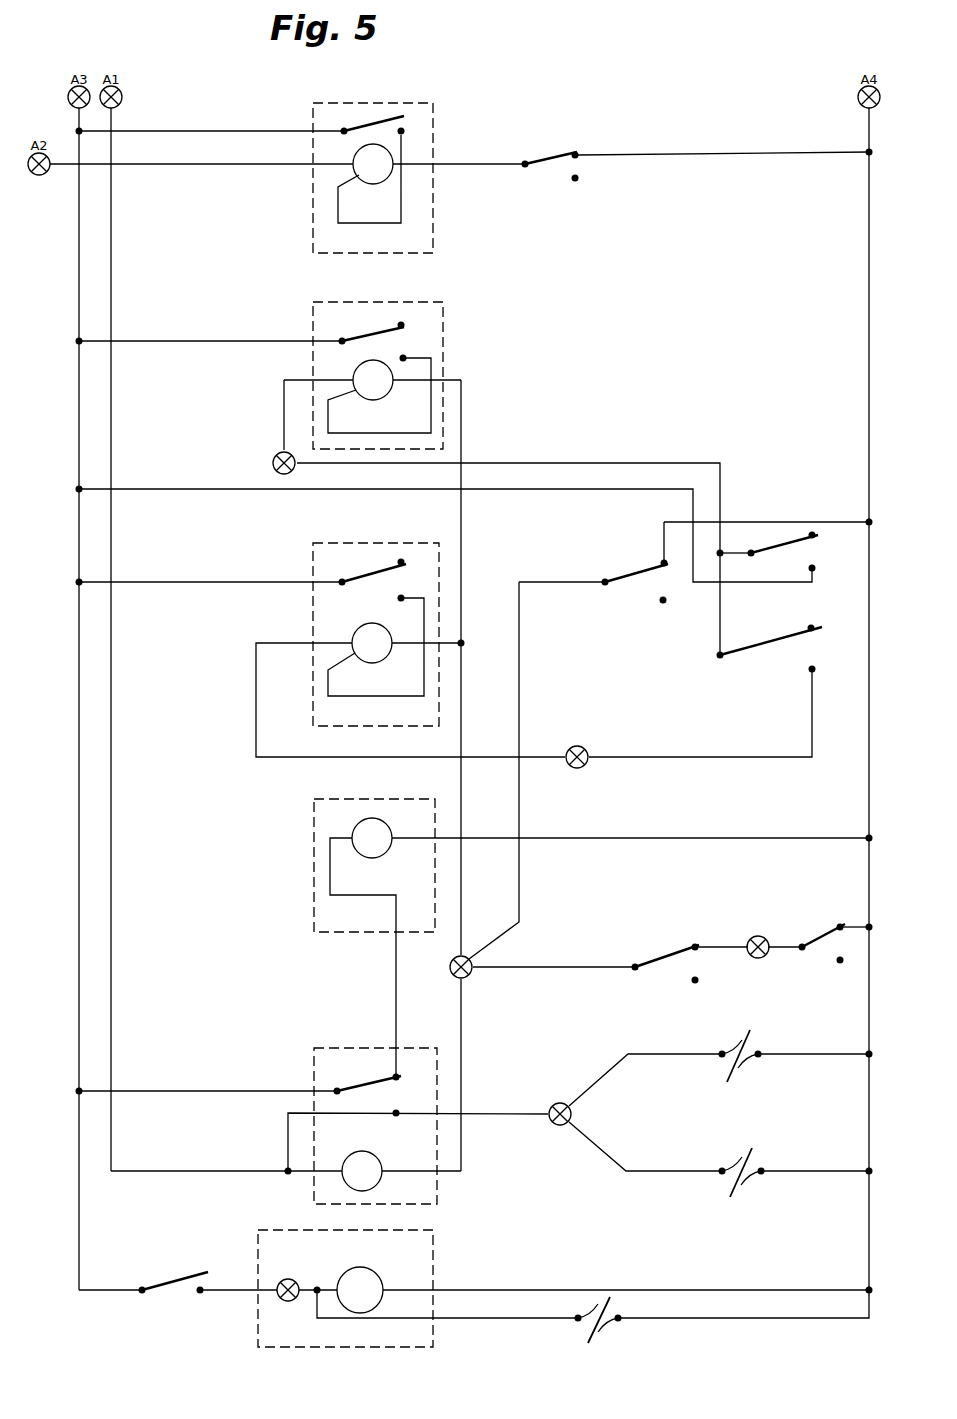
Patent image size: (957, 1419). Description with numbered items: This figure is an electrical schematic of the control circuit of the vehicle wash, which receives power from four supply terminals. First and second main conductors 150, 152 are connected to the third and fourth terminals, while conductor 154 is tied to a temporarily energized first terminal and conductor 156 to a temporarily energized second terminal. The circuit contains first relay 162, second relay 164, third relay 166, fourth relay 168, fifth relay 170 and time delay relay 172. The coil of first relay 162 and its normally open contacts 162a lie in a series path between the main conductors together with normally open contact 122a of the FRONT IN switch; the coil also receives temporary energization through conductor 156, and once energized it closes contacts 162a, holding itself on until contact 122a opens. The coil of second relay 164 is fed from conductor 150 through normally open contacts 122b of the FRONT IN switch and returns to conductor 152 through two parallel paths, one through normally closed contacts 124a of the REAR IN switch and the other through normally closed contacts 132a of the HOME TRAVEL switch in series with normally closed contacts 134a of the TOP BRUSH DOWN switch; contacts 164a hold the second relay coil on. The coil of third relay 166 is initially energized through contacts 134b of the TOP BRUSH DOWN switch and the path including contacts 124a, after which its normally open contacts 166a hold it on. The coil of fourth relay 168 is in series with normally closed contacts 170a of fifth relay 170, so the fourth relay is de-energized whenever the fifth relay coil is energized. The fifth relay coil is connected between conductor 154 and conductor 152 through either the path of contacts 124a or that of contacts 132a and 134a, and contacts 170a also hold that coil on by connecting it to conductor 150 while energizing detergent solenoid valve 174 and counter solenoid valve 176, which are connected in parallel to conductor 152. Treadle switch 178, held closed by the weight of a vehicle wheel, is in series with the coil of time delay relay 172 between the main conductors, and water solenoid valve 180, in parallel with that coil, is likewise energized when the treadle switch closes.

The first main conductor 150 is at (79, 305).
The second main conductor 152 is at (869, 129).
The conductor 154 is at (110, 426).
The conductor 156 is at (60, 178).
The first relay 162 is at (383, 103).
The normally open contacts 162a is at (408, 123).
The normally open contact of FRONT IN switch 122a is at (565, 149).
The second relay 164 is at (443, 302).
The normally open contacts 164a is at (416, 347).
The third relay 166 is at (428, 544).
The normally open contacts 166a is at (377, 568).
The normally closed contacts of REAR IN switch 124a is at (623, 567).
The normally open contacts of FRONT IN switch 122b is at (806, 557).
The contacts of TOP BRUSH DOWN switch 134b is at (804, 649).
The fourth relay 168 is at (314, 816).
The normally closed contacts of HOME TRAVEL switch 132a is at (668, 972).
The normally closed contacts of TOP BRUSH DOWN switch 134a is at (821, 952).
The fifth relay 170 is at (324, 1047).
The contacts 170a is at (416, 1100).
The detergent solenoid valve 174 is at (756, 1040).
The counter solenoid valve 176 is at (763, 1152).
The treadle switch 178 is at (168, 1277).
The time delay relay 172 is at (433, 1250).
The water solenoid valve 180 is at (593, 1312).